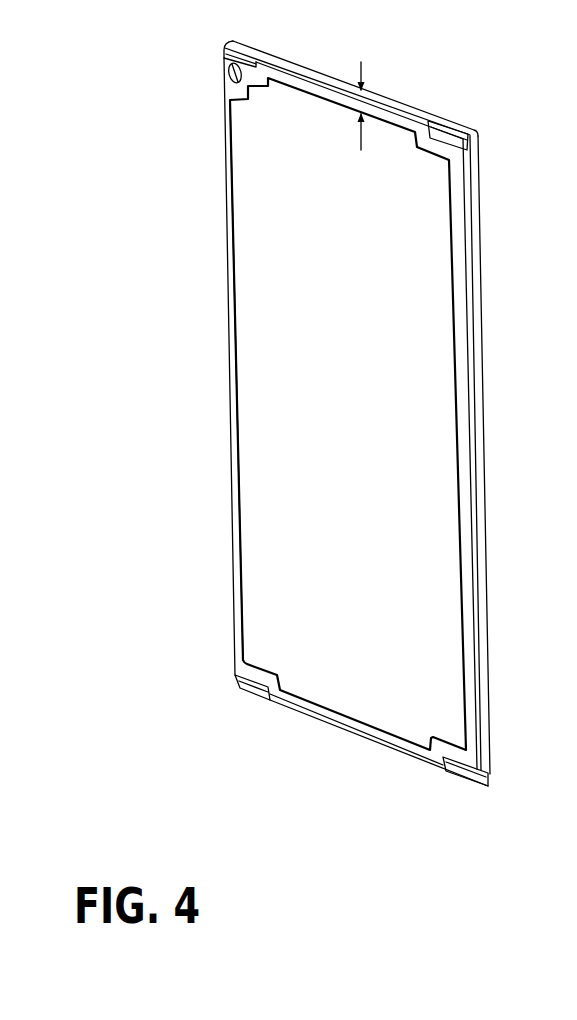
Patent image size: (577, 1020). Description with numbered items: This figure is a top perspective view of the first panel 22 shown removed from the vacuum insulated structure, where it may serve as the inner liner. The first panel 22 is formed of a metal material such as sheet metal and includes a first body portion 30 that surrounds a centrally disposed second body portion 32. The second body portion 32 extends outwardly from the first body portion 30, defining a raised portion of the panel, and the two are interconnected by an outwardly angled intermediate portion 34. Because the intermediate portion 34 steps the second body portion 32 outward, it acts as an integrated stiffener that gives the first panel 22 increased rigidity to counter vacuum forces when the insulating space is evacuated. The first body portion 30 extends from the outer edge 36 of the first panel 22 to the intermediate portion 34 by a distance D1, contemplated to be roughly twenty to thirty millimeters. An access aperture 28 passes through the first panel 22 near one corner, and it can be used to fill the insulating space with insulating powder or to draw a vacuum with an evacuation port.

The first panel 22 is at (178, 66).
The access aperture 28 is at (226, 78).
The first body portion 30 is at (231, 316).
The second body portion 32 is at (293, 432).
The intermediate portion 34 is at (454, 198).
The outer edge 36 is at (312, 70).
The distance D1 is at (362, 62).